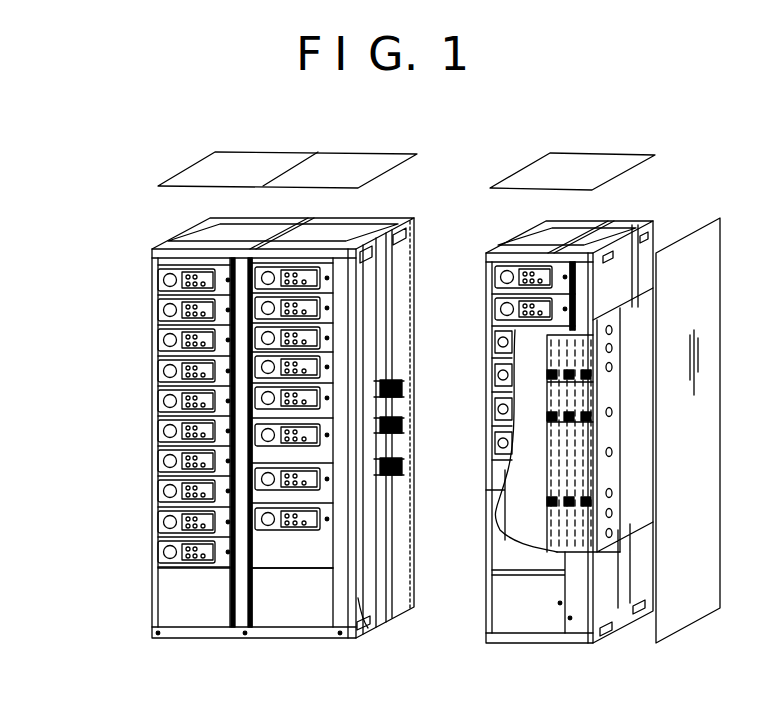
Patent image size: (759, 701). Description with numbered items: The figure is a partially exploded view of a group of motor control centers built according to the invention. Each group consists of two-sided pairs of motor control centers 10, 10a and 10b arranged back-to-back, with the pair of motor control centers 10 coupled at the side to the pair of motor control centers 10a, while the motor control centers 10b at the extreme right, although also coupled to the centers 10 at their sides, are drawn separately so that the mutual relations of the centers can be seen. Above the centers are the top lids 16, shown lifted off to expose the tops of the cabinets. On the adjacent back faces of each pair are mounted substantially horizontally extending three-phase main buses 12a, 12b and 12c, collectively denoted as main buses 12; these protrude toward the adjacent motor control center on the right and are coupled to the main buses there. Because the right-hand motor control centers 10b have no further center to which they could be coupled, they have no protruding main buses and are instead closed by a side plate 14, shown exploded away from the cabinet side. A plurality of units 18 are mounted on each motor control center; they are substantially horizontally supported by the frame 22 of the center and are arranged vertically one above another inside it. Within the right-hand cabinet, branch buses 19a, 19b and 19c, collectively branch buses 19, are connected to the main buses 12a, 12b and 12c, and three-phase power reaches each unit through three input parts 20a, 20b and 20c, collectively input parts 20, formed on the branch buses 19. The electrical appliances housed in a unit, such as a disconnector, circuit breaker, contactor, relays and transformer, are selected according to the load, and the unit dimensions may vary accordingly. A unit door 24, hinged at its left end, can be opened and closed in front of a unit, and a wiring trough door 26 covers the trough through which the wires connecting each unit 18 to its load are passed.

The motor control center 10 is at (343, 223).
The motor control center 10a is at (210, 223).
The motor control center 10b is at (587, 221).
The main buses 12 is at (432, 427).
The main bus 12a is at (402, 394).
The main bus 12b is at (402, 428).
The main bus 12c is at (417, 463).
The side plate 14 is at (712, 592).
The top lid 16 is at (269, 163).
The unit 18 is at (153, 283).
The branch buses 19 is at (641, 388).
The branch bus 19a is at (553, 358).
The branch bus 19b is at (569, 368).
The branch bus 19c is at (586, 386).
The input parts 20 is at (650, 504).
The input part 20a is at (553, 497).
The input part 20b is at (569, 505).
The input part 20c is at (586, 505).
The frame 22 is at (360, 634).
The unit door 24 is at (293, 560).
The wiring trough door 26 is at (342, 344).